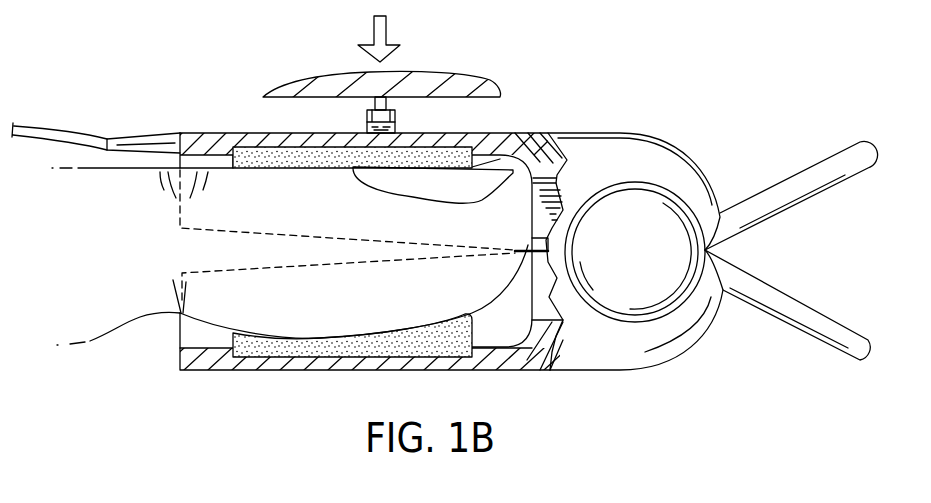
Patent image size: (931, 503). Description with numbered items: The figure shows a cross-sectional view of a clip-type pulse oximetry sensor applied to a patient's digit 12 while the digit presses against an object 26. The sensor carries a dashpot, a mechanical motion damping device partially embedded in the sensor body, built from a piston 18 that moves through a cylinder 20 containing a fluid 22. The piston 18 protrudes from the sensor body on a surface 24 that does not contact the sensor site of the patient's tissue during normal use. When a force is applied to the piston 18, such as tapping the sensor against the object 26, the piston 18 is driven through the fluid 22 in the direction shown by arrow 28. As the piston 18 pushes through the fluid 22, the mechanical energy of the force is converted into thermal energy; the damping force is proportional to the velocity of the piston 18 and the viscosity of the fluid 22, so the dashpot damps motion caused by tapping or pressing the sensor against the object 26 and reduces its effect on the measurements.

The patient's digit 12 is at (140, 313).
The piston 18 is at (388, 100).
The cylinder 20 is at (397, 121).
The fluid 22 is at (367, 125).
The surface 24 is at (533, 133).
The object 26 is at (312, 83).
The arrow 28 is at (384, 33).